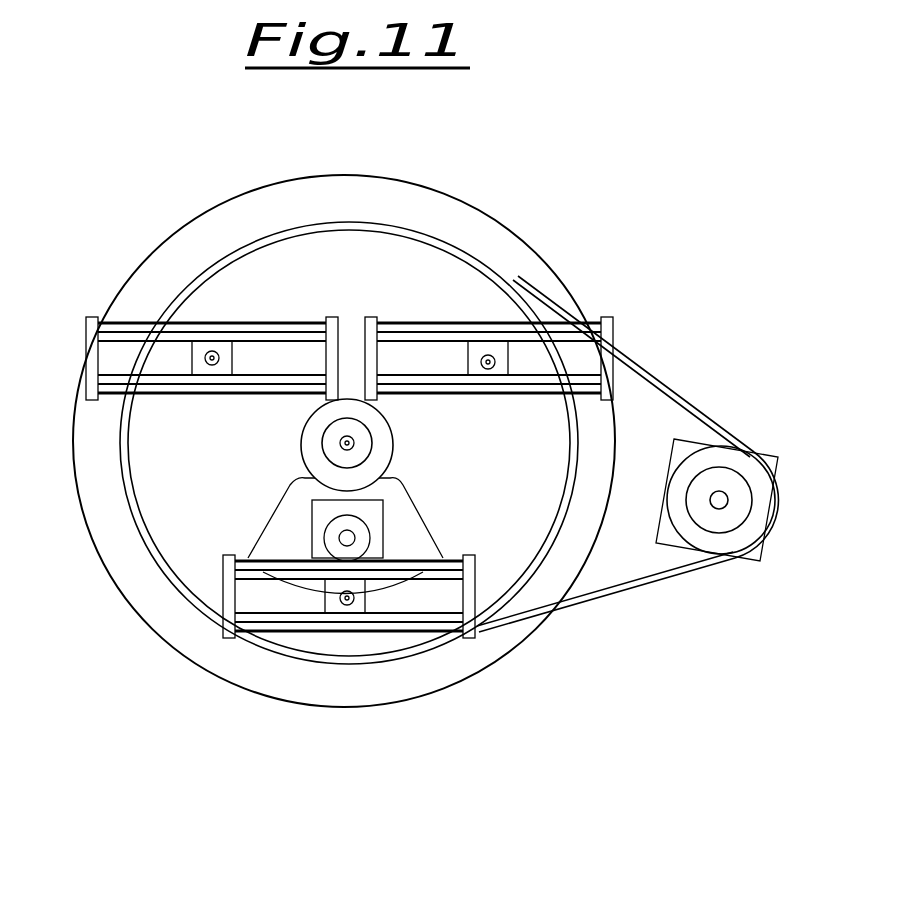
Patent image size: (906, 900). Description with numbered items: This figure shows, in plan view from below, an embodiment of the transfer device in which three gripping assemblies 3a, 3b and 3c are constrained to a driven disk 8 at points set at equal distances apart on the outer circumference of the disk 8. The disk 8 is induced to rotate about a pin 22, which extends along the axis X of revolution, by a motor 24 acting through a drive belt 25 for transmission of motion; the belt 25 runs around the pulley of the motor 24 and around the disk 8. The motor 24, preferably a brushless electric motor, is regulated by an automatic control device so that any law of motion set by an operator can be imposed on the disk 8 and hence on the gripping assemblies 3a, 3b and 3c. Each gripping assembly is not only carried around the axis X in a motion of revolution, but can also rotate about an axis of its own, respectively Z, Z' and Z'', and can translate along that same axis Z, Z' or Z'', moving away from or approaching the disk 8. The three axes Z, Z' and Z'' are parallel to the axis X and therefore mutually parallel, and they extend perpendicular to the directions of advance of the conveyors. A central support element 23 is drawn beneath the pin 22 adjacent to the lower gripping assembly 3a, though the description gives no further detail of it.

The driven disk 8 is at (146, 603).
The drive belt 25 is at (603, 590).
The motor 24 is at (745, 454).
The pin 22 is at (381, 452).
The axis of revolution X is at (352, 443).
The support 23 is at (283, 513).
The gripping assembly 3a is at (428, 640).
The gripping assembly 3b is at (122, 338).
The gripping assembly 3c is at (588, 317).
The axis Z is at (362, 669).
The axis Z' is at (206, 394).
The axis Z'' is at (469, 326).